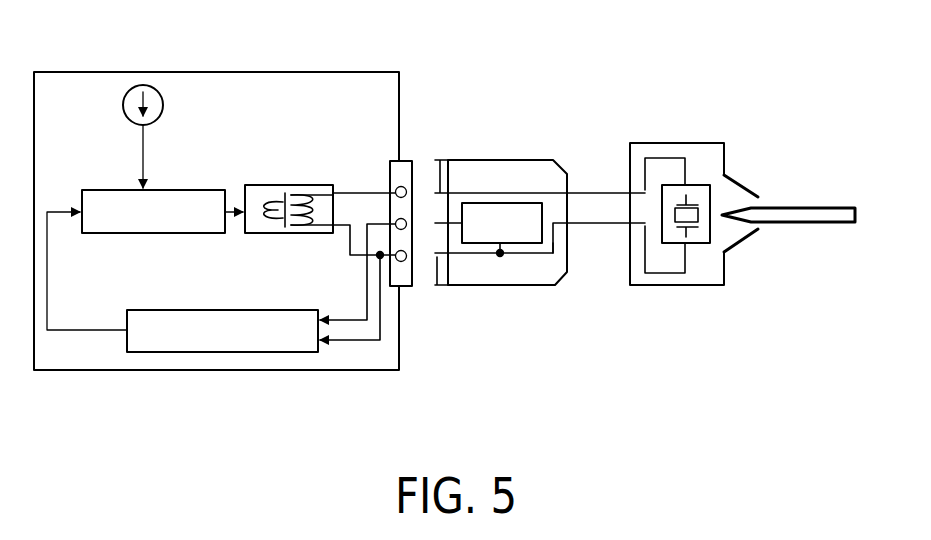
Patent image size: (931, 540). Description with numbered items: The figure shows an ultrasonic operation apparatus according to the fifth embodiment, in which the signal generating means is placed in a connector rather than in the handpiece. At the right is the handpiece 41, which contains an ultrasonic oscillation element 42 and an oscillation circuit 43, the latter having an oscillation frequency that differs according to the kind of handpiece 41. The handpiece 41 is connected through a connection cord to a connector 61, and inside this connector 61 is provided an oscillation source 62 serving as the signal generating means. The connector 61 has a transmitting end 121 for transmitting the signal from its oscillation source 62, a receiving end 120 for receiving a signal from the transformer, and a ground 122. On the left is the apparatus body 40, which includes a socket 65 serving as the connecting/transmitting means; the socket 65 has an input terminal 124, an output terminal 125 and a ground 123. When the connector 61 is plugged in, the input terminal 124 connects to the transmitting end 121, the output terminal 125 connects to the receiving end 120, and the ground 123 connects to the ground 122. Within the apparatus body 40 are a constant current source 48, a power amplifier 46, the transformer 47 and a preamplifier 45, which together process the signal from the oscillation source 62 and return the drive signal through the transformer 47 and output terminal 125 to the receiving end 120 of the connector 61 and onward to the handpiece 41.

The apparatus body 40 is at (275, 72).
The handpiece 41 is at (658, 142).
The ultrasonic oscillation element 42 is at (698, 243).
The oscillation circuit 43 is at (820, 207).
The preamplifier 45 is at (215, 308).
The power amplifier 46 is at (135, 236).
The transformer 47 is at (289, 185).
The constant current source 48 is at (165, 107).
The connector 61 is at (530, 160).
The oscillation source 62 is at (553, 243).
The socket 65 is at (408, 158).
The receiving end 120 is at (440, 160).
The transmitting end 121 is at (437, 223).
The ground 122 is at (437, 285).
The ground 123 is at (403, 262).
The input terminal 124 is at (395, 222).
The output terminal 125 is at (395, 187).